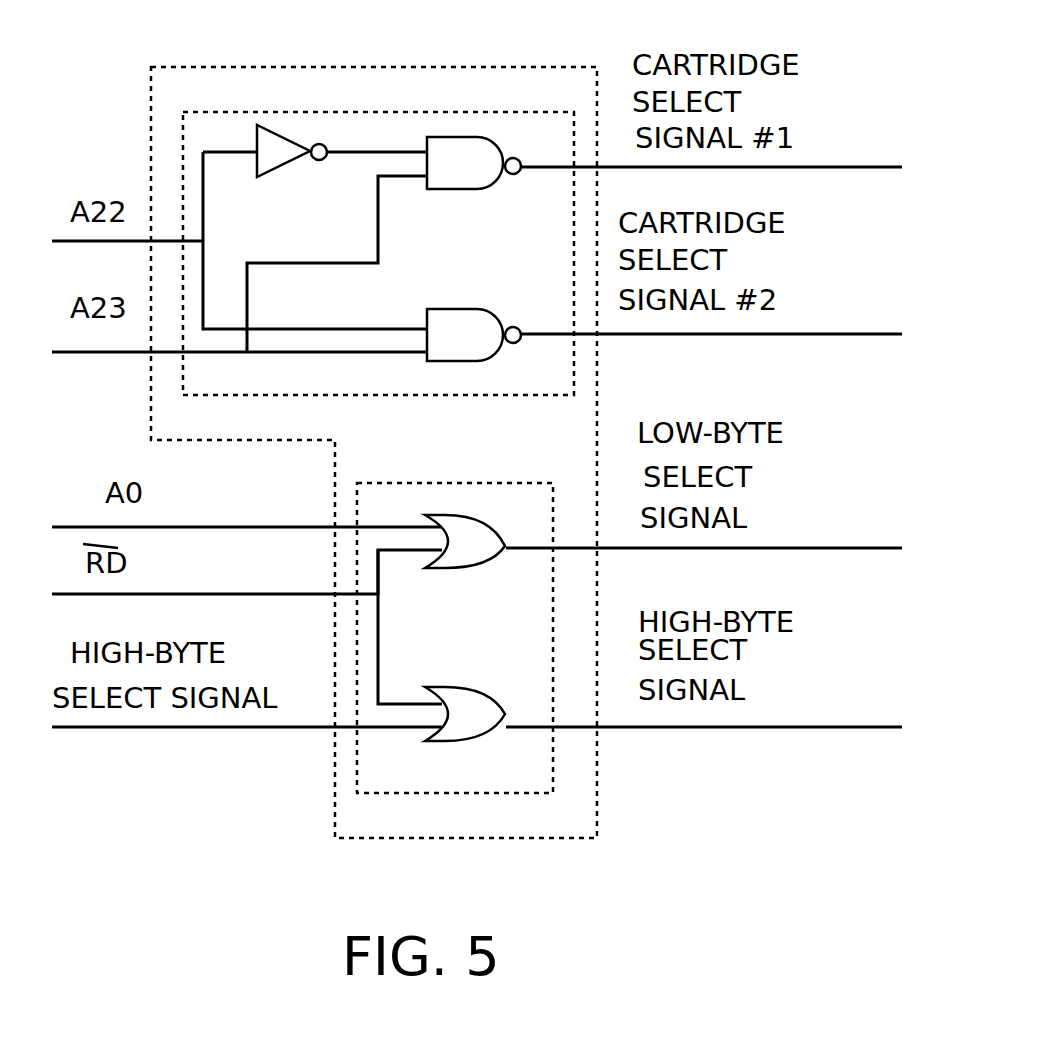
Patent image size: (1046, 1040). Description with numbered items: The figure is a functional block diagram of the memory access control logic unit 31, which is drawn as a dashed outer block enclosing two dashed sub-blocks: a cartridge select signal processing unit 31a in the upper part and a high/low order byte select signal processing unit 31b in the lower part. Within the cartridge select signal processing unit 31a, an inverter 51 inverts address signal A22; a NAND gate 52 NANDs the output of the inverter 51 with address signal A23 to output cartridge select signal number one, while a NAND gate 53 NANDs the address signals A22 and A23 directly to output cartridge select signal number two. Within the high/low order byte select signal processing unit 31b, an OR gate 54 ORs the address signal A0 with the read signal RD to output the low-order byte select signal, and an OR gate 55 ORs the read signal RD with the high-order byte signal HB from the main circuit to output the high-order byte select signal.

The memory access control logic unit 31 is at (330, 67).
The cartridge select signal processing unit 31a is at (573, 395).
The high/low order byte select signal processing unit 31b is at (437, 483).
The inverter 51 is at (277, 168).
The NAND gate 52 is at (460, 190).
The NAND gate 53 is at (518, 262).
The OR gate 54 is at (467, 568).
The OR gate 55 is at (518, 655).